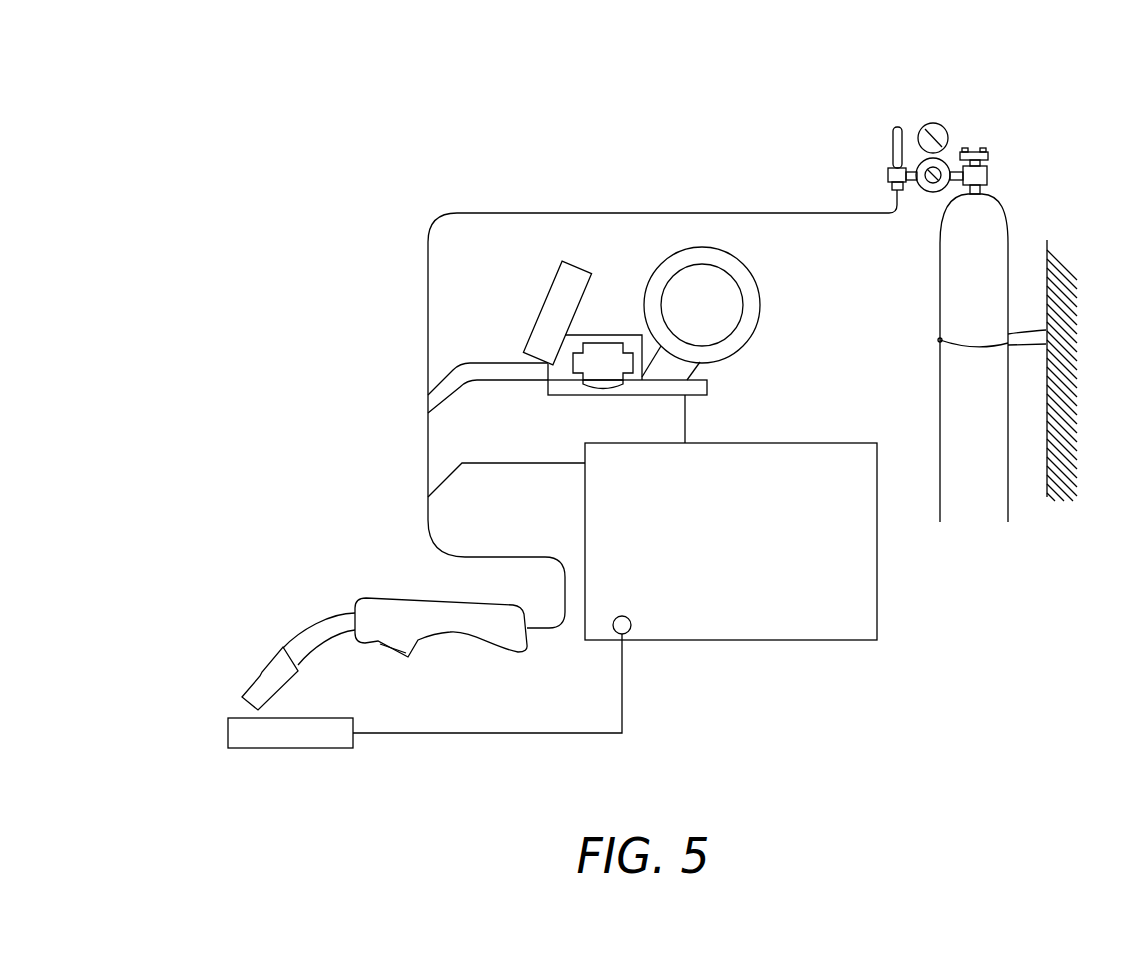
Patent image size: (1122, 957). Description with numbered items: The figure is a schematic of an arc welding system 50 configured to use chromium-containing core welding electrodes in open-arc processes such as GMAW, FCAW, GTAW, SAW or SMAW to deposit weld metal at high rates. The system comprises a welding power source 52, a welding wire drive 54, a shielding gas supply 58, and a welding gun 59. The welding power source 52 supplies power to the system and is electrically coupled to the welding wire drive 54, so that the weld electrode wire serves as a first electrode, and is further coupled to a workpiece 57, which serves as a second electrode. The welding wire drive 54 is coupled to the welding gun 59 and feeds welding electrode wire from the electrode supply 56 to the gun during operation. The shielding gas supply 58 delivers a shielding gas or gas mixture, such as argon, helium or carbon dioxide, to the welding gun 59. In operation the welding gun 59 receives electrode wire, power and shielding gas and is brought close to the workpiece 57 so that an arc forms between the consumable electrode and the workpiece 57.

The arc welding system 50 is at (403, 93).
The welding power source 52 is at (757, 640).
The welding wire drive 54 is at (572, 280).
The electrode supply 56 is at (748, 300).
The workpiece 57 is at (285, 738).
The shielding gas supply 58 is at (1025, 238).
The welding gun 59 is at (253, 660).